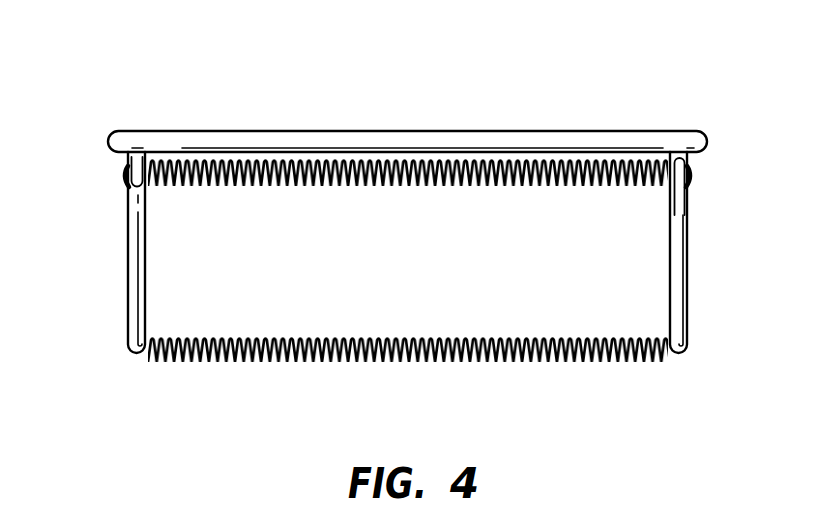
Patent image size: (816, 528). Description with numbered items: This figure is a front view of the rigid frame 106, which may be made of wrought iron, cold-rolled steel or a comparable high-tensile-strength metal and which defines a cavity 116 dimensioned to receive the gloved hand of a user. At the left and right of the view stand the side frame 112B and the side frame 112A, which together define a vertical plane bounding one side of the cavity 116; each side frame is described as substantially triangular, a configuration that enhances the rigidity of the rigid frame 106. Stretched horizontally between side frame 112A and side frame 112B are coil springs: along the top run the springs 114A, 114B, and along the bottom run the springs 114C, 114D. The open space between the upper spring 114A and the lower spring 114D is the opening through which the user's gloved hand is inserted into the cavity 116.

The rigid frame 106 is at (483, 108).
The side frame 112A is at (688, 225).
The side frame 112B is at (128, 205).
The spring 114A is at (423, 133).
The spring 114B is at (616, 162).
The spring 114C is at (408, 382).
The spring 114D is at (378, 362).
The cavity 116 is at (403, 274).